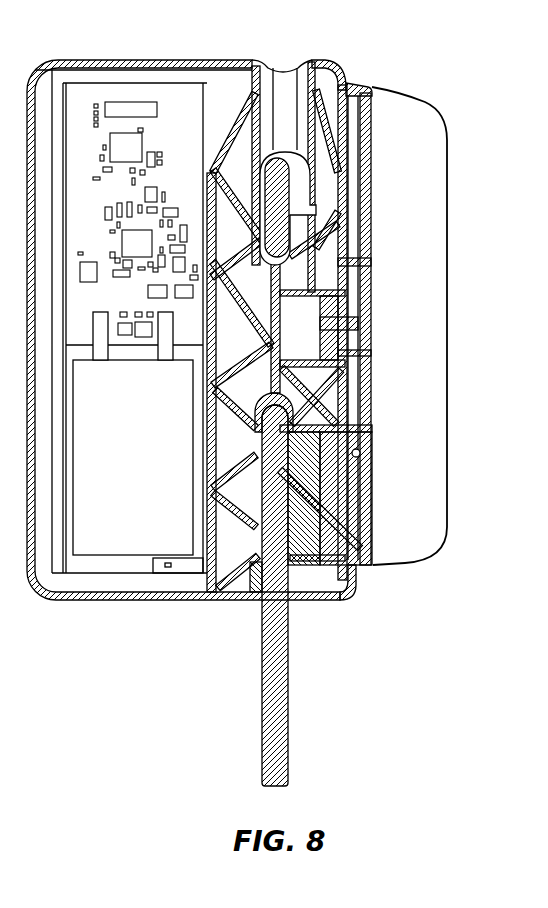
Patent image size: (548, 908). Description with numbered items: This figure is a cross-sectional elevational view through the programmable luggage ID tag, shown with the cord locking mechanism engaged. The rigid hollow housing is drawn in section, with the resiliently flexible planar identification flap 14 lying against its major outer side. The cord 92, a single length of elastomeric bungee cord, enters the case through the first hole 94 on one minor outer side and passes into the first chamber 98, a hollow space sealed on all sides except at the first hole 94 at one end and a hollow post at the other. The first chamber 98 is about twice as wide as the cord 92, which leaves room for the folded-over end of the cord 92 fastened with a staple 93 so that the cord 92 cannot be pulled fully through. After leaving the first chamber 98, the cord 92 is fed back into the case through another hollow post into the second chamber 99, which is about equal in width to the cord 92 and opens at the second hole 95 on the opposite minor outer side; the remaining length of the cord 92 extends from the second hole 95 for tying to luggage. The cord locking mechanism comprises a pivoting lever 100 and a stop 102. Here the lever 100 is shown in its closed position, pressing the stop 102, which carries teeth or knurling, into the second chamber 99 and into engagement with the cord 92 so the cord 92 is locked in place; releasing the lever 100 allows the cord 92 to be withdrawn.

The identification flap 14 is at (412, 100).
The cord 92 is at (300, 168).
The staple 93 is at (306, 192).
The first hole 94 is at (276, 58).
The second hole 95 is at (260, 600).
The first chamber 98 is at (288, 93).
The second chamber 99 is at (247, 580).
The lever 100 is at (360, 515).
The stop 102 is at (370, 482).